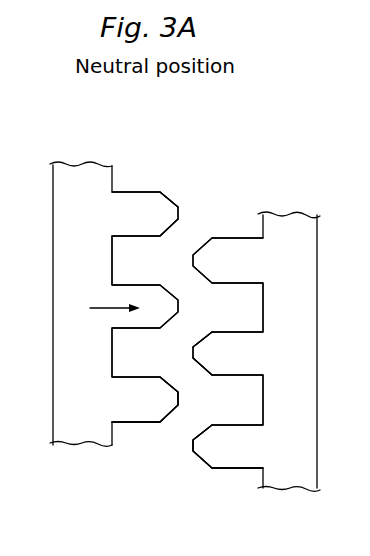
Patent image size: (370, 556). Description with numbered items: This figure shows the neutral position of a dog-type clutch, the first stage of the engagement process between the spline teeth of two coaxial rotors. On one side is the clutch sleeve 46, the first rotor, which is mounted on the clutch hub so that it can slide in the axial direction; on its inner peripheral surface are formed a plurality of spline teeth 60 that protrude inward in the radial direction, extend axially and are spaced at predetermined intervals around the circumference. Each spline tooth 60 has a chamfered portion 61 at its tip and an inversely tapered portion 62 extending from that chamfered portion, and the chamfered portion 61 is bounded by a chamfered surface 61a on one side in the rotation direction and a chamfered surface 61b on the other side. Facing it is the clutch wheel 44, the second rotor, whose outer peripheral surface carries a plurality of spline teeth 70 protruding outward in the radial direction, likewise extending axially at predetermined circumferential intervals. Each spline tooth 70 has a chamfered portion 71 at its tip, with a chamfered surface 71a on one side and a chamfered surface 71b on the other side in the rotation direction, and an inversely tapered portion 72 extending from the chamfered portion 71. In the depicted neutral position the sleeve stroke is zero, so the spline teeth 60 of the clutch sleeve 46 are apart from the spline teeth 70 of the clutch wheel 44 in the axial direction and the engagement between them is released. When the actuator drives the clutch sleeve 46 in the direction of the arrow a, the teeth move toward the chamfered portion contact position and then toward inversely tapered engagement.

The clutch wheel 44 is at (292, 192).
The clutch sleeve 46 is at (66, 460).
The spline teeth 60 is at (185, 486).
The chamfered portion 61 is at (168, 430).
The chamfered surface 61a is at (174, 198).
The chamfered surface 61b is at (181, 228).
The inversely tapered portion 62 is at (131, 431).
The spline teeth 70 is at (252, 531).
The chamfered portion 71 is at (200, 474).
The chamfered surface 71a is at (196, 338).
The chamfered surface 71b is at (199, 366).
The inversely tapered portion 72 is at (237, 478).
The arrow a is at (108, 308).